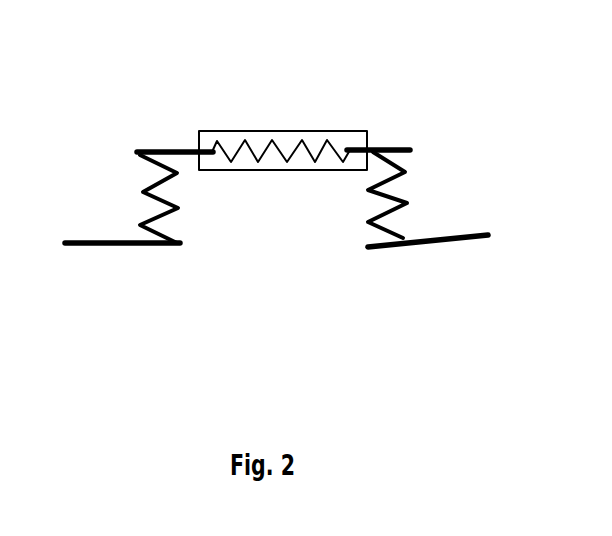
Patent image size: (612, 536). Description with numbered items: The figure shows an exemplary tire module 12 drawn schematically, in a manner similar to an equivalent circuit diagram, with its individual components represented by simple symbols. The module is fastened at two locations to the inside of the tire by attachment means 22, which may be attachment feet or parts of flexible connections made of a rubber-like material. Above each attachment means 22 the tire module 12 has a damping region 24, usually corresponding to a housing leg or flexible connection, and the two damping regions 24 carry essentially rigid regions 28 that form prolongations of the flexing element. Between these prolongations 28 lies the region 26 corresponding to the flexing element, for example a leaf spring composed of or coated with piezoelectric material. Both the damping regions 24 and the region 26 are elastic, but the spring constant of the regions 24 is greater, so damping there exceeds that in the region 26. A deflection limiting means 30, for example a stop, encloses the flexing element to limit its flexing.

The tire module 12 is at (187, 58).
The attachment means 22 is at (102, 247).
The damping regions 24 is at (145, 192).
The flexing element region 26 is at (293, 148).
The prolongations of the flexing element 28 is at (164, 150).
The deflection limiting means 30 is at (347, 130).